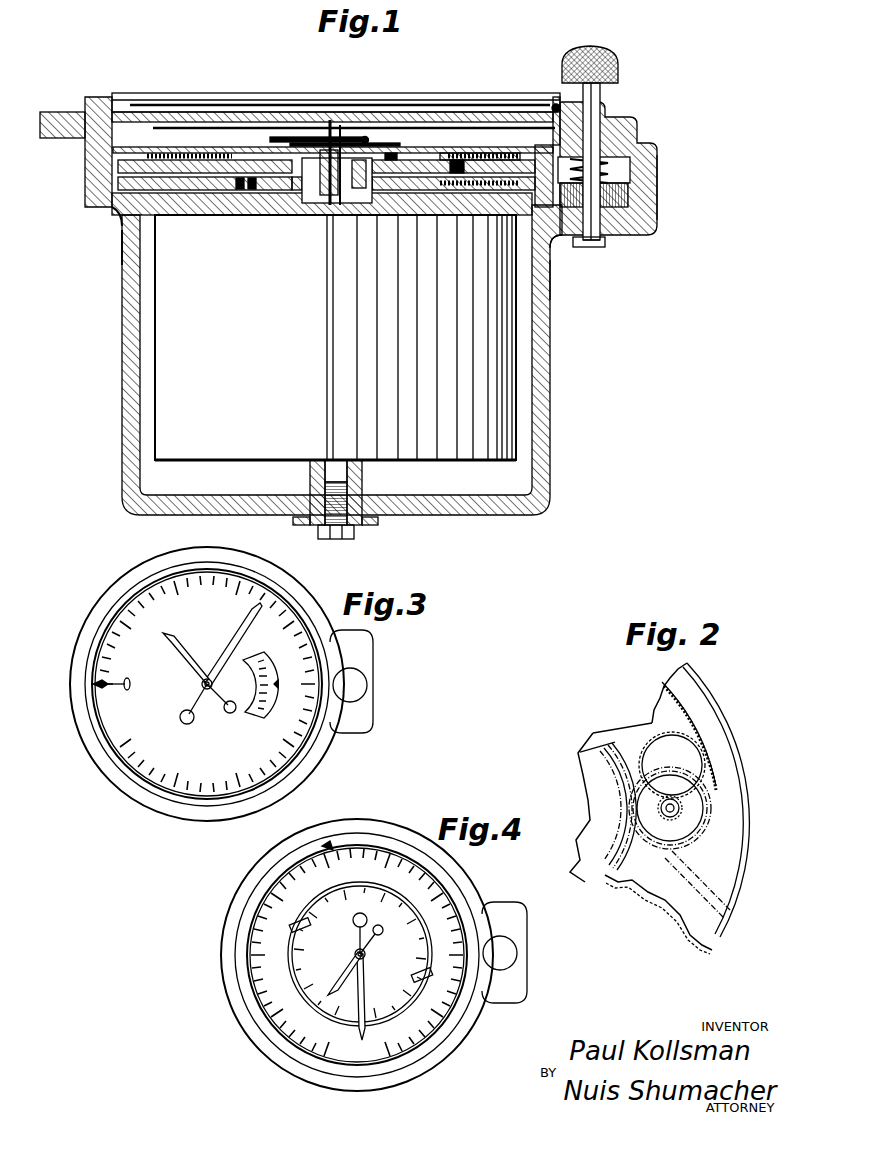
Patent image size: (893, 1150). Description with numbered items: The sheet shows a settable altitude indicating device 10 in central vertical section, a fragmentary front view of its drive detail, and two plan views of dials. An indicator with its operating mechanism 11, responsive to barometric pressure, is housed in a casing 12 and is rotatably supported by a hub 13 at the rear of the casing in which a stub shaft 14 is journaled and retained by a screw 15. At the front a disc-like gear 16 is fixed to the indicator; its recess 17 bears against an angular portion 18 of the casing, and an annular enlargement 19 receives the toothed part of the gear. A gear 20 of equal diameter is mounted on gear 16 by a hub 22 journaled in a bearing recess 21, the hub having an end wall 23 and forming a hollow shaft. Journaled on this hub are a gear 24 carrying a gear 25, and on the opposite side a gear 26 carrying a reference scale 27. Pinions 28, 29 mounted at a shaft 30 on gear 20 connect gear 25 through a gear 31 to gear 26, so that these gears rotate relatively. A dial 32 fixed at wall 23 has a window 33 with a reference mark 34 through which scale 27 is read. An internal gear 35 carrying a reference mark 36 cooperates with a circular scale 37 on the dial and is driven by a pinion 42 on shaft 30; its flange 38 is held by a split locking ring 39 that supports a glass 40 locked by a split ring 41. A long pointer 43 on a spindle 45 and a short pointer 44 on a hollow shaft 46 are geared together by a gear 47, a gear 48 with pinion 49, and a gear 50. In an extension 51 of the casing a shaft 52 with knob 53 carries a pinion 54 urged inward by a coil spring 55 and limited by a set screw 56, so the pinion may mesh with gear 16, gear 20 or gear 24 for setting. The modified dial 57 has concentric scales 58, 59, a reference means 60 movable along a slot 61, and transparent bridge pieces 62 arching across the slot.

In FIG. 1, the device 10 is at (580, 292).
In FIG. 1, the indicator operating mechanism 11 is at (335, 337).
In FIG. 1, the casing 12 is at (542, 400).
In FIG. 1, the hub 13 is at (375, 520).
In FIG. 1, the stub shaft 14 is at (312, 475).
In FIG. 1, the screw 15 is at (345, 539).
In FIG. 1, the gear 16 is at (200, 216).
In FIG. 1, the recess 17 is at (115, 212).
In FIG. 1, the casing wall 18 is at (120, 232).
In FIG. 1, the annular enlargement 19 is at (100, 170).
In FIG. 1, the gear 20 is at (225, 195).
In FIG. 2, the gear 20 is at (695, 938).
In FIG. 1, the bearing recess 21 is at (280, 195).
In FIG. 1, the hub 22 is at (290, 185).
In FIG. 1, the end wall 23 is at (380, 165).
In FIG. 1, the gear 24 is at (240, 190).
In FIG. 1, the gear 25 is at (250, 182).
In FIG. 2, the gear 25 is at (598, 875).
In FIG. 1, the gear 26 is at (262, 170).
In FIG. 2, the gear 26 is at (628, 870).
In FIG. 1, the reference scale means 27 is at (420, 180).
In FIG. 3, the reference scale means 27 is at (272, 735).
In FIG. 1, the pinion 28 is at (568, 240).
In FIG. 2, the pinion 28 is at (690, 888).
In FIG. 1, the pinion 29 is at (455, 160).
In FIG. 2, the pinion 29 is at (676, 814).
In FIG. 1, the shaft 30 is at (495, 178).
In FIG. 1, the gear 31 is at (510, 150).
In FIG. 2, the gear 31 is at (650, 735).
In FIG. 1, the dial 32 is at (225, 150).
In FIG. 3, the dial 32 is at (175, 775).
In FIG. 1, the window 33 is at (432, 156).
In FIG. 3, the window 33 is at (268, 664).
In FIG. 3, the reference mark 34 is at (276, 690).
In FIG. 1, the internal gear 35 is at (180, 155).
In FIG. 2, the internal gear 35 is at (688, 700).
In FIG. 1, the reference mark 36 is at (150, 125).
In FIG. 3, the reference mark 36 is at (93, 684).
In FIG. 4, the reference mark 36 is at (330, 843).
In FIG. 3, the circular scale 37 is at (140, 636).
In FIG. 1, the flange 38 is at (553, 120).
In FIG. 2, the flange 38 is at (740, 744).
In FIG. 1, the split locking ring 39 is at (70, 112).
In FIG. 1, the glass 40 is at (305, 141).
In FIG. 1, the split ring 41 is at (118, 117).
In FIG. 1, the pinion 42 is at (480, 155).
In FIG. 2, the pinion 42 is at (700, 814).
In FIG. 1, the long pointer 43 is at (205, 127).
In FIG. 3, the long pointer 43 is at (262, 606).
In FIG. 4, the long pointer 43 is at (358, 1030).
In FIG. 1, the short pointer 44 is at (300, 136).
In FIG. 3, the short pointer 44 is at (163, 633).
In FIG. 4, the short pointer 44 is at (328, 995).
In FIG. 1, the spindle 45 is at (330, 205).
In FIG. 1, the hollow shaft 46 is at (335, 145).
In FIG. 1, the gear 47 is at (320, 205).
In FIG. 1, the gear 48 is at (333, 240).
In FIG. 1, the pinion 49 is at (390, 160).
In FIG. 1, the gear 50 is at (334, 180).
In FIG. 1, the extension 51 is at (657, 155).
In FIG. 3, the extension 51 is at (365, 712).
In FIG. 4, the extension 51 is at (515, 925).
In FIG. 1, the shaft 52 is at (600, 128).
In FIG. 1, the knob 53 is at (618, 68).
In FIG. 3, the knob 53 is at (362, 670).
In FIG. 4, the knob 53 is at (512, 955).
In FIG. 1, the pinion 54 is at (615, 195).
In FIG. 1, the coil spring 55 is at (608, 170).
In FIG. 1, the set screw 56 is at (605, 242).
In FIG. 4, the dial 57 is at (432, 925).
In FIG. 4, the scale 58 is at (405, 858).
In FIG. 4, the scale 59 is at (392, 995).
In FIG. 4, the reference means 60 is at (325, 1012).
In FIG. 4, the slot 61 is at (315, 895).
In FIG. 4, the bridge pieces 62 is at (290, 925).